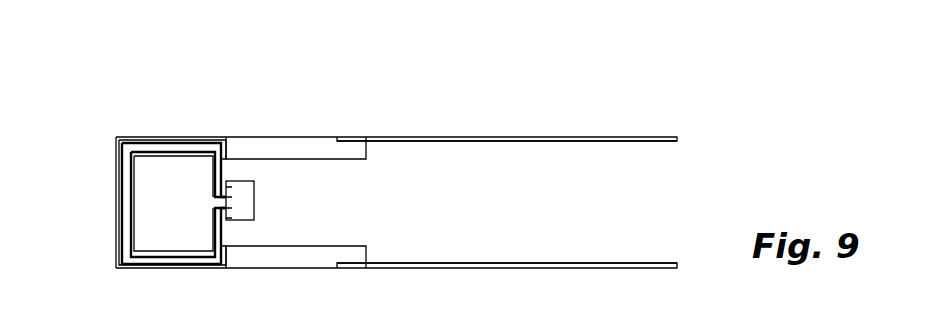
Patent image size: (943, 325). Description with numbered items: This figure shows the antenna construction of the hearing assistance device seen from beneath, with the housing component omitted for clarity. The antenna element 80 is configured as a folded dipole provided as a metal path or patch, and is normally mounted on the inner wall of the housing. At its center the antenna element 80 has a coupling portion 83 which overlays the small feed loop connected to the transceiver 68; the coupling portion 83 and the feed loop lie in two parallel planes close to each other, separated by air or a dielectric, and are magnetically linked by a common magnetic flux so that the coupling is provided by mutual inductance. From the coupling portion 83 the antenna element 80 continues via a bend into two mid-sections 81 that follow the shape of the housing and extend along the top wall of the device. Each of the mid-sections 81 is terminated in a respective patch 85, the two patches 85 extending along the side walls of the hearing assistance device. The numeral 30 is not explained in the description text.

The housing / outer box 30 is at (171, 138).
The transceiver 68 is at (247, 198).
The antenna element 80 is at (518, 124).
The mid-sections 81 is at (277, 148).
The coupling portion 83 is at (120, 205).
The patches 85 is at (550, 262).